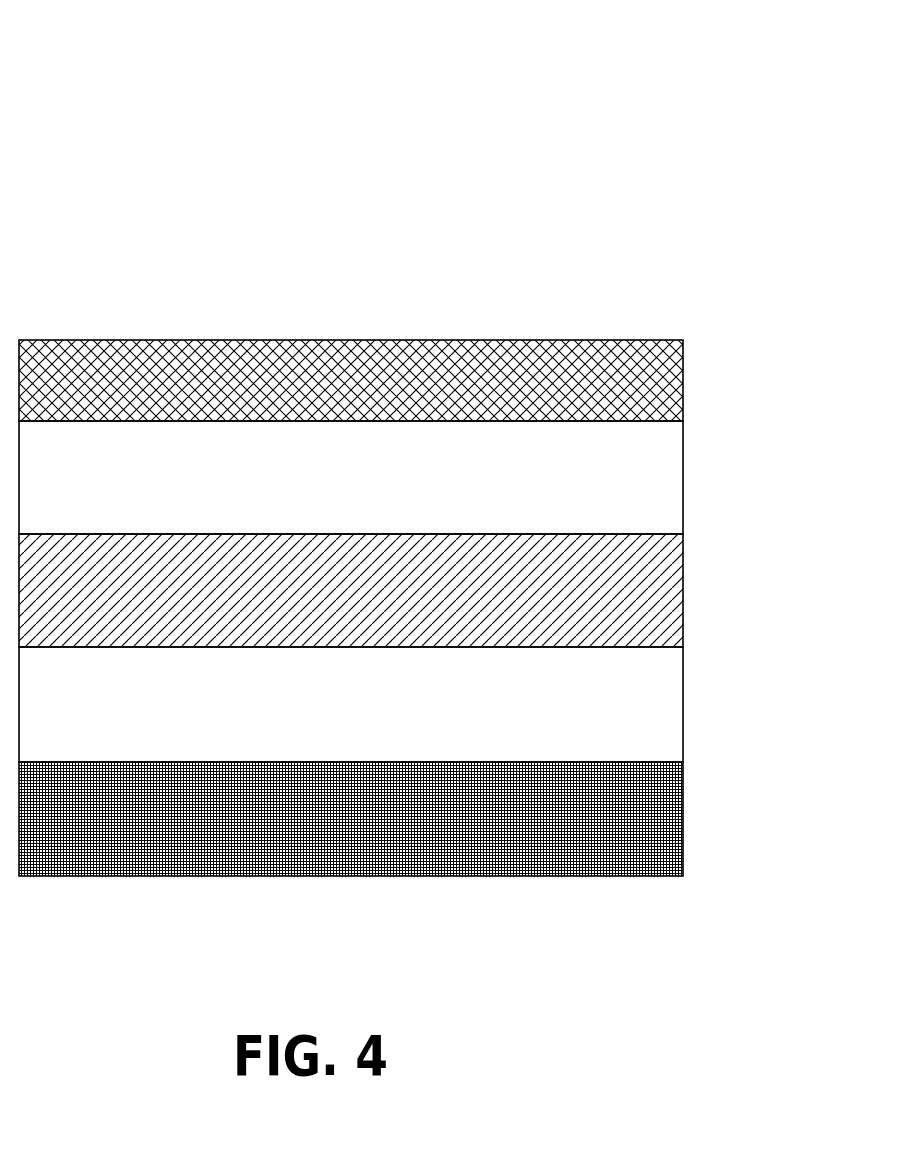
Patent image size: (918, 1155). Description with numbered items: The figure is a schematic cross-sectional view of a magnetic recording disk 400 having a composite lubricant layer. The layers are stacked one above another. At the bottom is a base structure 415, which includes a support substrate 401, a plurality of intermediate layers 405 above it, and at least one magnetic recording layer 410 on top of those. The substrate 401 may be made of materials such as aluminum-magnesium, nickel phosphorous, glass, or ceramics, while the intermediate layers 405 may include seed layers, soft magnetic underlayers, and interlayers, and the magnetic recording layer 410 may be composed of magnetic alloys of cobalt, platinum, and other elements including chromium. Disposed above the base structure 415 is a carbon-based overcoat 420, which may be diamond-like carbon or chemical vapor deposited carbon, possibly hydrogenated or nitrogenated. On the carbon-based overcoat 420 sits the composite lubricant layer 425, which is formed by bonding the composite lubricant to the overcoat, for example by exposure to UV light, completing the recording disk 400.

The magnetic recording disk 400 is at (243, 188).
The support substrate 401 is at (373, 825).
The plurality of intermediate layers 405 is at (373, 715).
The magnetic recording layer 410 is at (373, 600).
The base structure 415 is at (723, 538).
The carbon-based overcoat 420 is at (373, 488).
The composite lubricant layer 425 is at (373, 392).